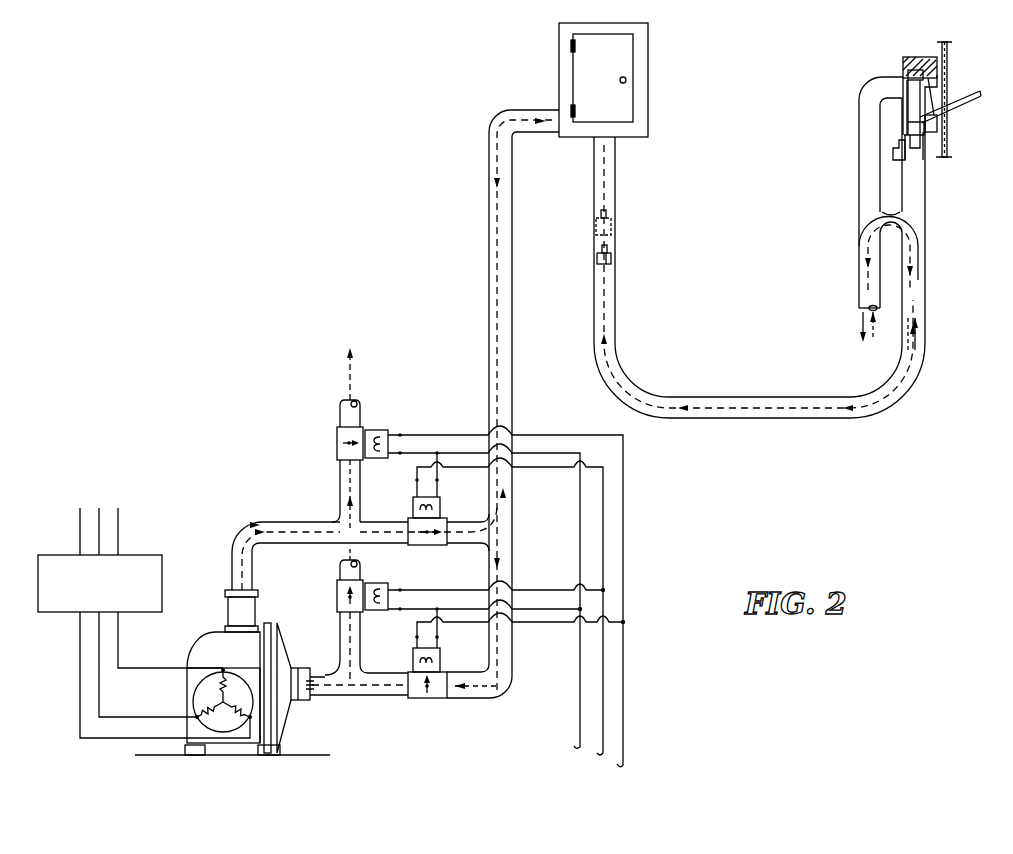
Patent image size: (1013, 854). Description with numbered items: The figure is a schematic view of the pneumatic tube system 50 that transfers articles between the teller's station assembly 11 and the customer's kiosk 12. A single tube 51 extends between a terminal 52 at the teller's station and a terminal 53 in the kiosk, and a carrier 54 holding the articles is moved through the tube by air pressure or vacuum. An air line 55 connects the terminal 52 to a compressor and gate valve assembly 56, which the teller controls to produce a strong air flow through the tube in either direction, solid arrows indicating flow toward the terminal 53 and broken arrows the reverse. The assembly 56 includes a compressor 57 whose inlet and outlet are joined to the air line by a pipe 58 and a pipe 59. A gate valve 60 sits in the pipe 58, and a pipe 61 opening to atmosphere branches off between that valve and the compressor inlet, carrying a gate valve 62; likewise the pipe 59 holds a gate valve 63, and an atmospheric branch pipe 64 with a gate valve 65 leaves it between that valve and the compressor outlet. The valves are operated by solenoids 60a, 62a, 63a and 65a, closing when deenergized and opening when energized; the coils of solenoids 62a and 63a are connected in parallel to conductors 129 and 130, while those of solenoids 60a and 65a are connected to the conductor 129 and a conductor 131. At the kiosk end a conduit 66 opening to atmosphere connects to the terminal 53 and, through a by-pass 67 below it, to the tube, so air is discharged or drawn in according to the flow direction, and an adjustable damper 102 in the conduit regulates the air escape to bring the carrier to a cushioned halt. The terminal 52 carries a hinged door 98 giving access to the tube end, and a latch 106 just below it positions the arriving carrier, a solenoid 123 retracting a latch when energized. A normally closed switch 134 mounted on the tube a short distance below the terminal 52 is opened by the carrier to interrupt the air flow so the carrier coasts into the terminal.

The teller's station assembly 11 is at (513, 54).
The kiosk 12 is at (803, 72).
The pneumatic tube system 50 is at (858, 452).
The tube 51 is at (595, 316).
The terminal 52 is at (648, 76).
The terminal 53 is at (903, 66).
The carrier 54 is at (922, 95).
The air line 55 is at (506, 378).
The compressor and gate valve assembly 56 is at (207, 462).
The compressor 57 is at (252, 727).
The pipe 58 is at (366, 684).
The pipe 59 is at (366, 530).
The gate valve 60 is at (460, 693).
The solenoid 60a is at (440, 660).
The pipe 61 is at (340, 571).
The gate valve 62 is at (337, 600).
The solenoid 62a is at (378, 584).
The gate valve 63 is at (430, 545).
The solenoid 63a is at (440, 507).
The pipe 64 is at (340, 410).
The gate valve 65 is at (337, 441).
The solenoid 65a is at (378, 430).
The conduit 66 is at (861, 190).
The by-pass 67 is at (890, 214).
The hinged door 98 is at (625, 100).
The damper 102 is at (862, 162).
The latch 106 is at (611, 228).
The solenoid 123 is at (893, 152).
The conductor 129 is at (573, 746).
The conductor 130 is at (603, 753).
The conductor 131 is at (623, 764).
The switch 134 is at (611, 257).